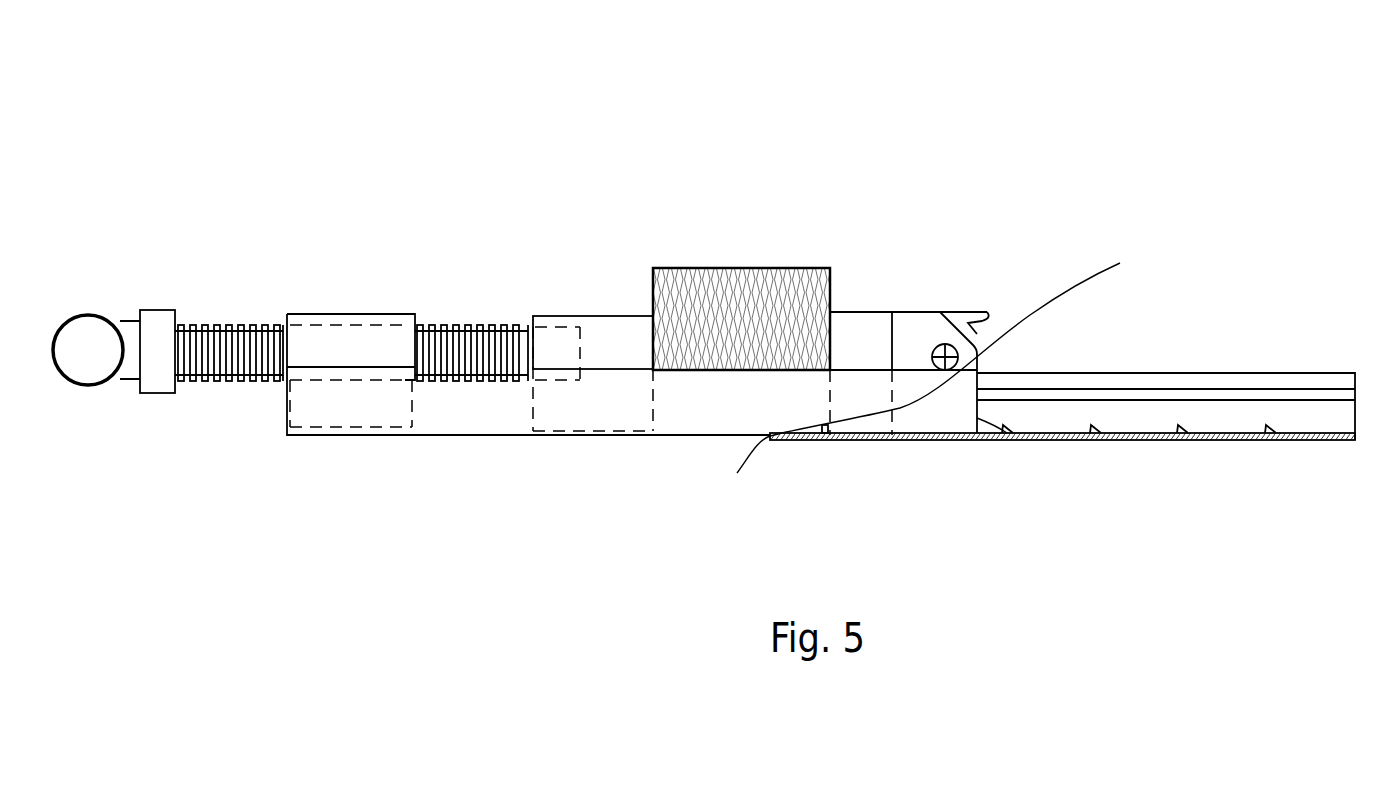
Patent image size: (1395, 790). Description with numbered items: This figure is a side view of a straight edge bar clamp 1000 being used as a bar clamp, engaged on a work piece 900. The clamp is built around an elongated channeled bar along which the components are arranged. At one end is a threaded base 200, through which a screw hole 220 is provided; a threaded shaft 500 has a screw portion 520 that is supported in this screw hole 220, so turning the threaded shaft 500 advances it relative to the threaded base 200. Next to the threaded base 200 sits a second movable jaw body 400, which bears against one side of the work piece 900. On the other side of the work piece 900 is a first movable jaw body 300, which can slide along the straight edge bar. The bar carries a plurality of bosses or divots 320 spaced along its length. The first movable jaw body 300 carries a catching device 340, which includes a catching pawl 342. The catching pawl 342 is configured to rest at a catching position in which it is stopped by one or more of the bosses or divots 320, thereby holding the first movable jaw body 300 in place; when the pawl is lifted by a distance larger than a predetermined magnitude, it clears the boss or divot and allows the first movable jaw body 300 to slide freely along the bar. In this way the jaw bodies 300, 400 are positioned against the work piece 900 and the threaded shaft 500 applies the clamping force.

The straight edge bar clamp 1000 is at (993, 95).
The threaded shaft 500 is at (257, 327).
The screw portion 520 is at (225, 381).
The threaded base 200 is at (380, 312).
The screw hole 220 is at (318, 352).
The second movable jaw body 400 is at (626, 316).
The work piece 900 is at (737, 268).
The first movable jaw body 300 is at (843, 312).
The catching device 340 is at (962, 312).
The catching pawl 342 is at (987, 433).
The bosses or divots 320 is at (1268, 434).